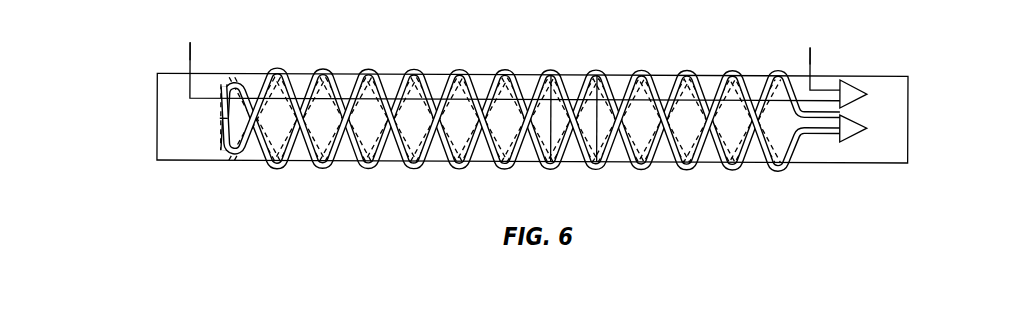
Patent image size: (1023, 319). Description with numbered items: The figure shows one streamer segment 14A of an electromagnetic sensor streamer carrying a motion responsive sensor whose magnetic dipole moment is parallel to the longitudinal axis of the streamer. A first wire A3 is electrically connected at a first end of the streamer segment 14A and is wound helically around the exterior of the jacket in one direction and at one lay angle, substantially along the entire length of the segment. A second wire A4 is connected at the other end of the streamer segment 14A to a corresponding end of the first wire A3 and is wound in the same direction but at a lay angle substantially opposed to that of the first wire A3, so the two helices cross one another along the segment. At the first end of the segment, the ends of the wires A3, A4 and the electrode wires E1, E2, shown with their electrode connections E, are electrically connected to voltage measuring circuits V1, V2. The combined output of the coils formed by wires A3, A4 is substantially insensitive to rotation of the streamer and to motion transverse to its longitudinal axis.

The streamer segment 14A is at (467, 112).
The electrode lead E is at (500, 42).
The electrode wire E1 is at (188, 54).
The electrode wire E2 is at (811, 60).
The first wire A3 is at (229, 66).
The second wire A4 is at (232, 171).
The voltage measuring circuit V1 is at (867, 96).
The voltage measuring circuit V2 is at (867, 129).